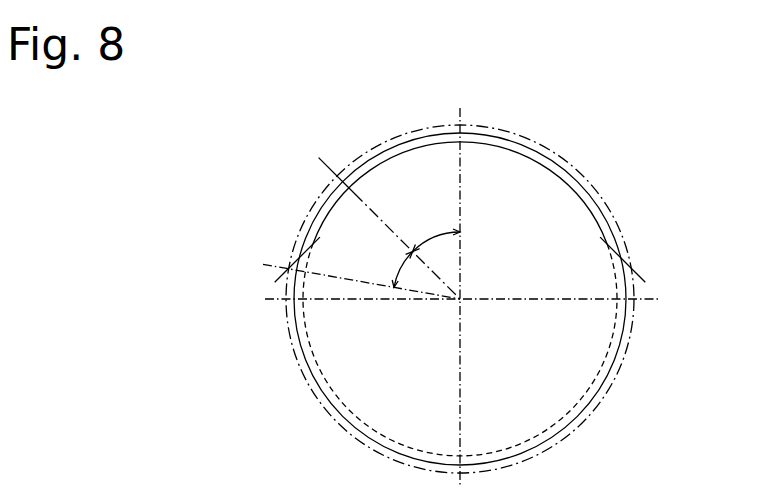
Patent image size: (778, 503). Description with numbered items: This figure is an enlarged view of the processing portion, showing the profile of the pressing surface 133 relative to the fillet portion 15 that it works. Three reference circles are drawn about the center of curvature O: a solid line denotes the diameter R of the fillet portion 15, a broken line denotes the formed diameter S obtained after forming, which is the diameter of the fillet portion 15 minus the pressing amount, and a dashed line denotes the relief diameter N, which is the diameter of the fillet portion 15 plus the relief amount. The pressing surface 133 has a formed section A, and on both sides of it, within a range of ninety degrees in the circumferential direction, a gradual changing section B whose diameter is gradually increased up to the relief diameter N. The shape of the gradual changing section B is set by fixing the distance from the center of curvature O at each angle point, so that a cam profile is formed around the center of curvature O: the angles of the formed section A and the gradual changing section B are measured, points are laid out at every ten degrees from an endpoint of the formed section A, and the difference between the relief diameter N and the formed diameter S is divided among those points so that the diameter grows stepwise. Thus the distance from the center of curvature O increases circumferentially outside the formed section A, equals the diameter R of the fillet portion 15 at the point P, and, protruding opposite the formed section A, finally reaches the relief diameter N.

The pressing surface 133 is at (387, 160).
The fillet portion 15 is at (618, 357).
The diameter of the fillet portion R is at (573, 178).
The relief diameter N is at (288, 333).
The formed diameter S is at (588, 390).
The point P is at (293, 258).
The formed section A is at (436, 231).
The gradual changing section B is at (395, 266).
The center of curvature O is at (461, 300).